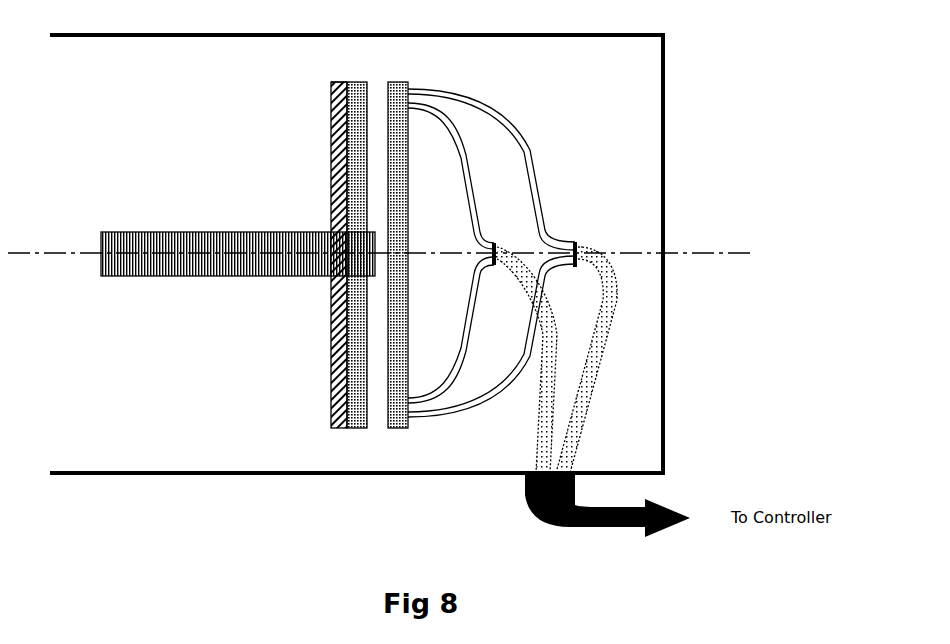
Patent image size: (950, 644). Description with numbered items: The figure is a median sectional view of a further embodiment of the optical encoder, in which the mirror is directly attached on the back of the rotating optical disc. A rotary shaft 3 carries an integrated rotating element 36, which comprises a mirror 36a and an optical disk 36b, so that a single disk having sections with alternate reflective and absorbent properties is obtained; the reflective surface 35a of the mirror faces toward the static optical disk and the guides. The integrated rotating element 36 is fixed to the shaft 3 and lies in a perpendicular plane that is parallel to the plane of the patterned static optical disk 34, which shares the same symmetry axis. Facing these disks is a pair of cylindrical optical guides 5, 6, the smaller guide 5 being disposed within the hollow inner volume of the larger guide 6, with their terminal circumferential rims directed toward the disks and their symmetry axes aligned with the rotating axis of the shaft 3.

The rotary shaft 3 is at (143, 285).
The cylindrical optical guide 5 is at (508, 191).
The cylindrical optical guide 6 is at (576, 212).
The patterned static optical disk 34 is at (383, 312).
The reflective surface 35a is at (349, 81).
The integrated rotating element 36 is at (261, 255).
The mirror 36a is at (324, 179).
The optical disk 36b is at (348, 200).